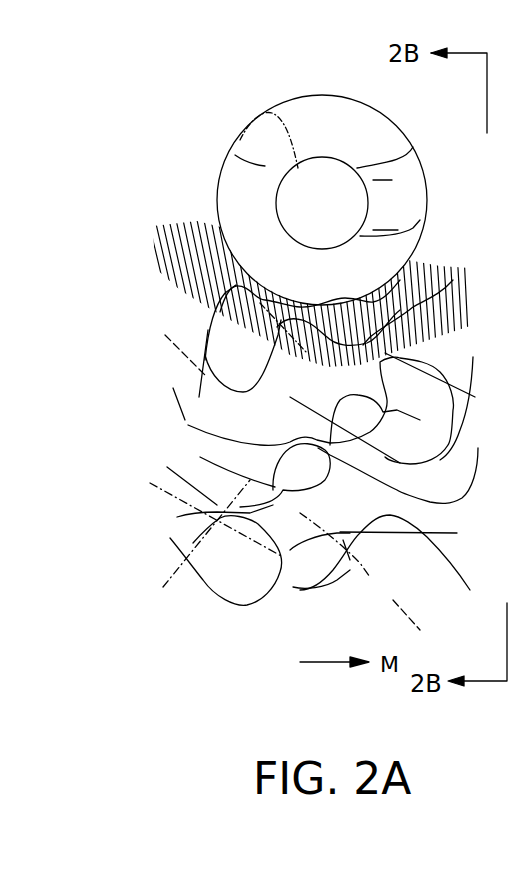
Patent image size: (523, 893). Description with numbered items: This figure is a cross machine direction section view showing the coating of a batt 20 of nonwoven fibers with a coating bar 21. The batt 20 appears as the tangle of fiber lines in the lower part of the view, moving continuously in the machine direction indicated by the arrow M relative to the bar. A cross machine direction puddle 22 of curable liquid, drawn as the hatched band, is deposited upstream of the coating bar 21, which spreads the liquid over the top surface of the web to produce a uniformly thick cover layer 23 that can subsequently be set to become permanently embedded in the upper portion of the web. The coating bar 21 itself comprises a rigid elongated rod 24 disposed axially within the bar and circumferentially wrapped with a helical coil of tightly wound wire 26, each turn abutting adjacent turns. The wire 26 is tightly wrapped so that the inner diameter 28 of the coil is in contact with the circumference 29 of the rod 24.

The batt 20 is at (276, 600).
The coating bar 21 is at (215, 170).
The puddle 22 is at (153, 232).
The cover layer 23 is at (430, 272).
The rigid elongated rod 24 is at (262, 128).
The wire 26 is at (362, 109).
The inner diameter 28 is at (300, 188).
The circumference 29 is at (235, 155).